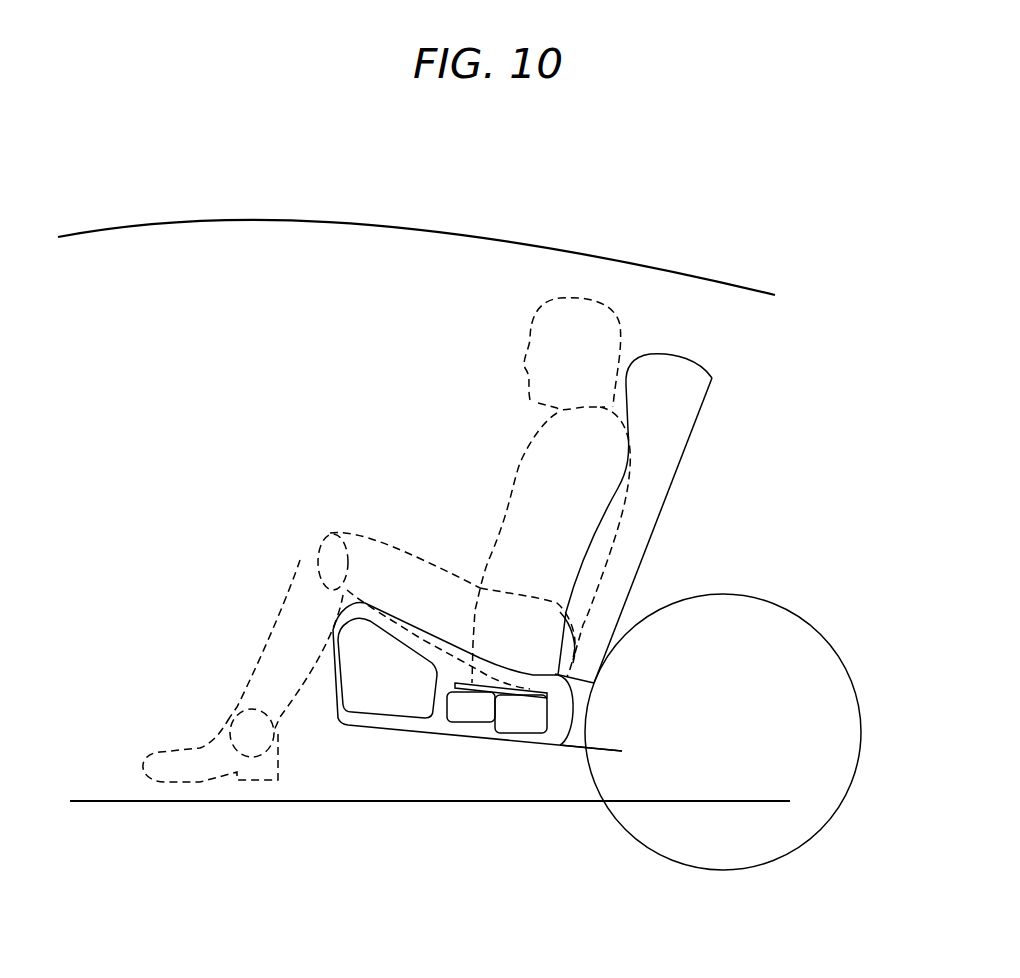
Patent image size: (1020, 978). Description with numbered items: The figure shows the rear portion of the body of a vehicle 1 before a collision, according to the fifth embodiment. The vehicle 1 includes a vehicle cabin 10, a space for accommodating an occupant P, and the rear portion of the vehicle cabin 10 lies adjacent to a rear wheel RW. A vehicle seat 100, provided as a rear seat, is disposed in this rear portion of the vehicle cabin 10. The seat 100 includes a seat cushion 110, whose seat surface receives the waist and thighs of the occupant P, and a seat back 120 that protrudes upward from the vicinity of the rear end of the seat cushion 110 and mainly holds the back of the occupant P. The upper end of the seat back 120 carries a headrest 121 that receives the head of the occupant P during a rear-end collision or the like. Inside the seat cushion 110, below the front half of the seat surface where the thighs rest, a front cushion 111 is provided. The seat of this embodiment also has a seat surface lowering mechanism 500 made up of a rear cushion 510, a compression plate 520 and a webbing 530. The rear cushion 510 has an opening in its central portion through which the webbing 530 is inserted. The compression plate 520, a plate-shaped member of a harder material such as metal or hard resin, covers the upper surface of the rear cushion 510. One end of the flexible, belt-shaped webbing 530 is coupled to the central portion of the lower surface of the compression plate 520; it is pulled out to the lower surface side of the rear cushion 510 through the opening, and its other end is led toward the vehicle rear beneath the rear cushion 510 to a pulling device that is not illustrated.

The vehicle 1 is at (118, 215).
The vehicle cabin 10 is at (293, 370).
The occupant P is at (560, 283).
The vehicle seat 100 is at (488, 655).
The seat cushion 110 is at (375, 723).
The front cushion 111 is at (342, 645).
The seat back 120 is at (662, 508).
The headrest 121 is at (712, 378).
The seat surface lowering mechanism 500 is at (452, 819).
The rear cushion 510 is at (477, 717).
The compression plate 520 is at (470, 687).
The webbing 530 is at (597, 748).
The rear wheel RW is at (757, 863).